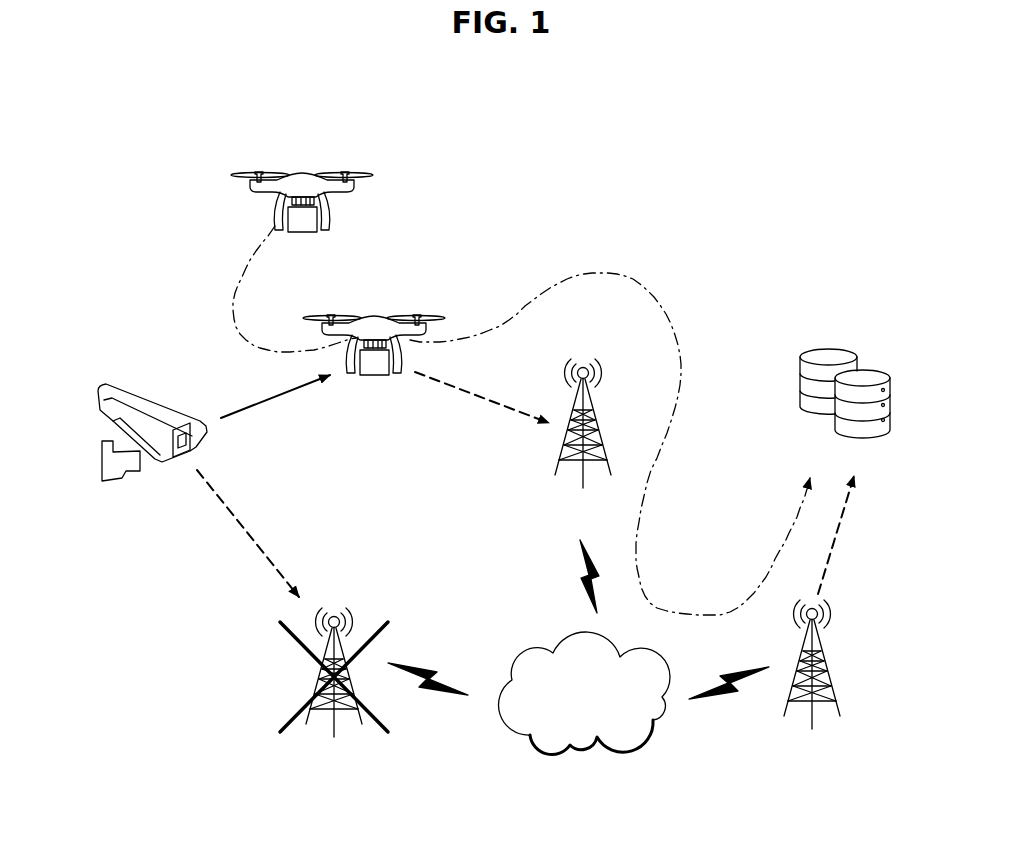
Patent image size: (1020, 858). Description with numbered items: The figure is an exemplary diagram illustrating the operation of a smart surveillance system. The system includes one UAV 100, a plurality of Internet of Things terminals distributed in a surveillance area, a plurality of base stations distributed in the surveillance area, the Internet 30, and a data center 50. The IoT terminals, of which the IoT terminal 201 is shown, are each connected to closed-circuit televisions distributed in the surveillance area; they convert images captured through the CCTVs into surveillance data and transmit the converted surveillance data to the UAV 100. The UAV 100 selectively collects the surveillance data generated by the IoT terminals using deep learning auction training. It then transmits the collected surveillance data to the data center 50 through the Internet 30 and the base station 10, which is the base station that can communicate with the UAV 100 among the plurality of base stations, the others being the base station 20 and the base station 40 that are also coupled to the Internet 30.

The UAV 100 is at (303, 173).
The IoT terminal 201 is at (128, 384).
The base station 10 is at (583, 367).
The base station 20 is at (334, 616).
The Internet 30 is at (527, 650).
The base station 40 is at (822, 666).
The data center 50 is at (870, 346).